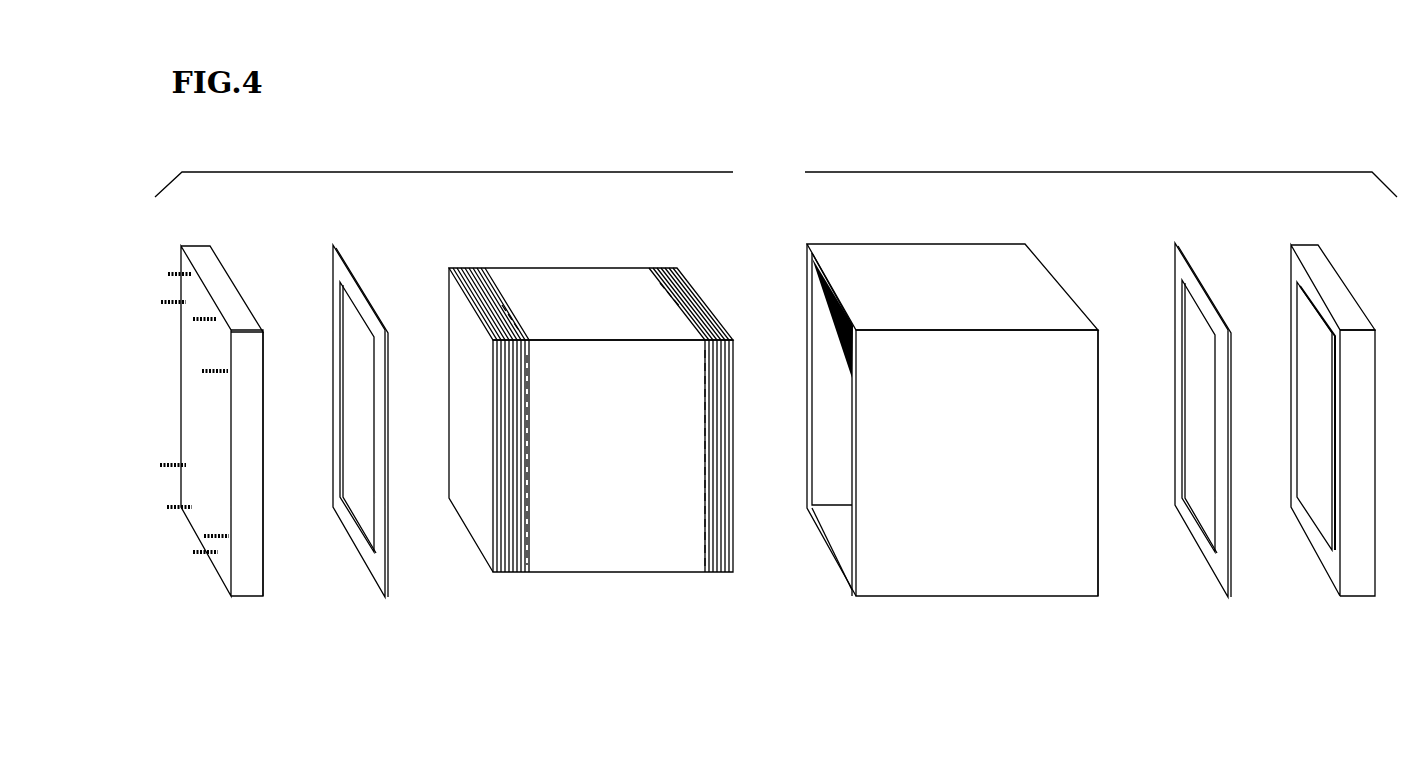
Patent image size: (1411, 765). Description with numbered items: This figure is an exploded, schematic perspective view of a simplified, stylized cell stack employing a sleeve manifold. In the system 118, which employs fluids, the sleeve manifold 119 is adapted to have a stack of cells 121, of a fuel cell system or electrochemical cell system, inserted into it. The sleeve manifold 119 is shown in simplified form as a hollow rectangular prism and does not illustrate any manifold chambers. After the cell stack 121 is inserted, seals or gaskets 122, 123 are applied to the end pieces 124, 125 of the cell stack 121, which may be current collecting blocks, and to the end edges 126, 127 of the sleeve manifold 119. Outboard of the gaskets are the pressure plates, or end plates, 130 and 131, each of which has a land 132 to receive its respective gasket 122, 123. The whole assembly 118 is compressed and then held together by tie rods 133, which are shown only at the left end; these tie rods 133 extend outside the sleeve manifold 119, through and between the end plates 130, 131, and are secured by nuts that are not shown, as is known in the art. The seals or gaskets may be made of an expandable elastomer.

The system 118 is at (776, 178).
The sleeve manifold 119 is at (985, 449).
The cell stack 121 is at (610, 450).
The gasket 122 is at (387, 587).
The gasket 123 is at (1230, 583).
The end piece 124 is at (483, 545).
The end piece 125 is at (733, 550).
The end edge 126 is at (852, 587).
The end edge 127 is at (1098, 577).
The pressure plate 130 is at (240, 577).
The pressure plate 131 is at (1357, 585).
The land 132 is at (238, 291).
The tie rods 133 is at (202, 315).